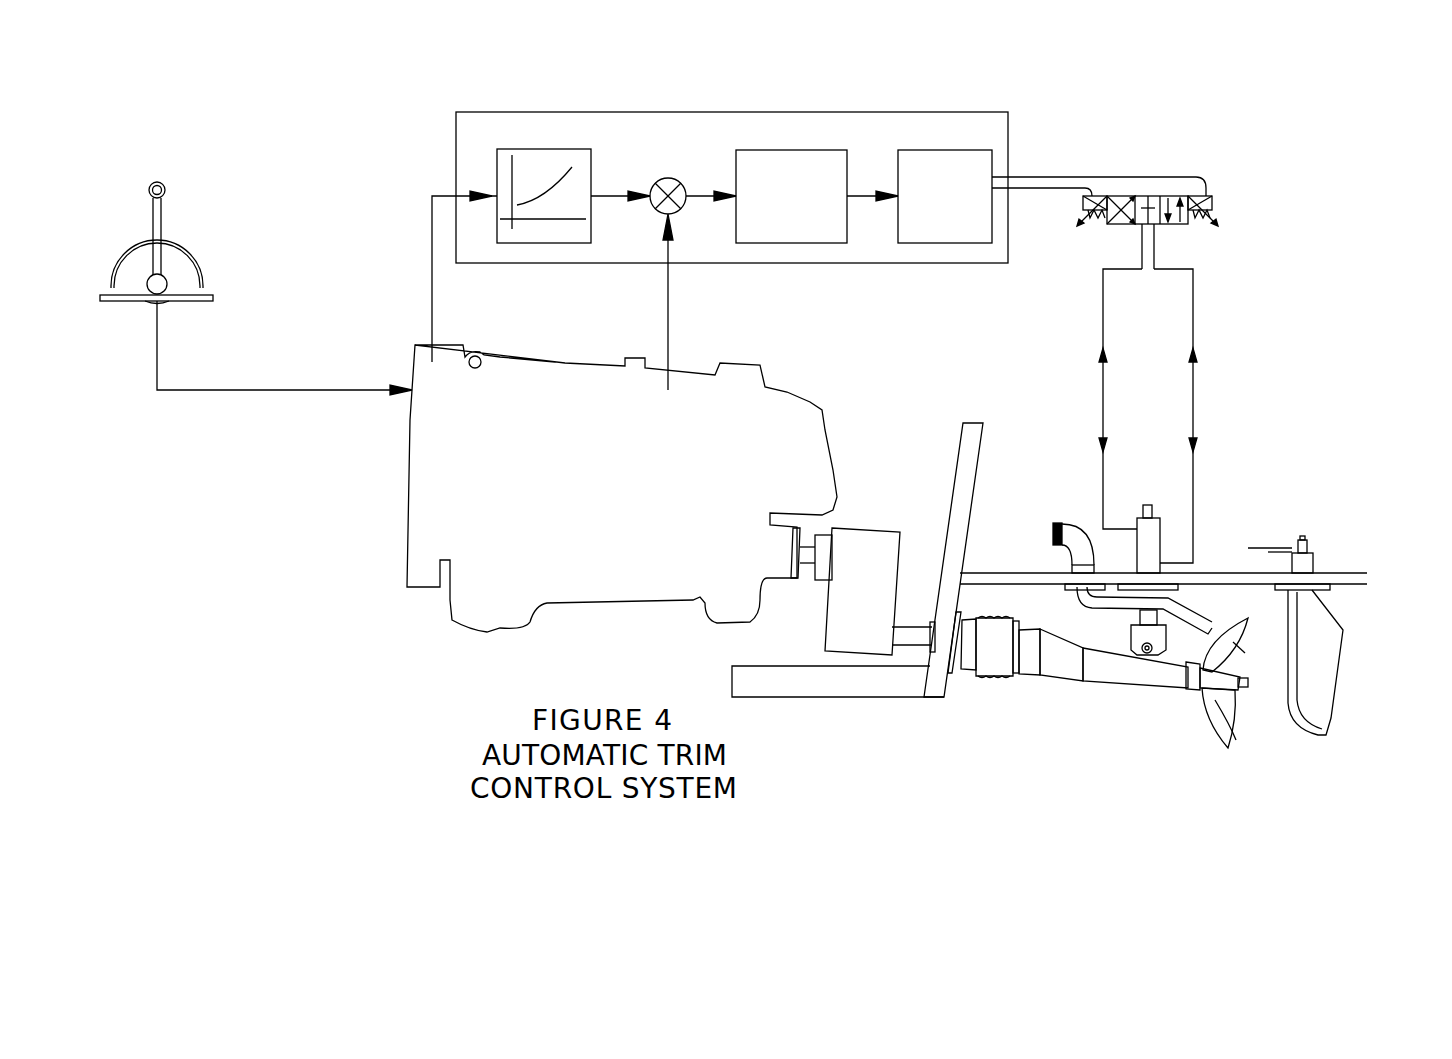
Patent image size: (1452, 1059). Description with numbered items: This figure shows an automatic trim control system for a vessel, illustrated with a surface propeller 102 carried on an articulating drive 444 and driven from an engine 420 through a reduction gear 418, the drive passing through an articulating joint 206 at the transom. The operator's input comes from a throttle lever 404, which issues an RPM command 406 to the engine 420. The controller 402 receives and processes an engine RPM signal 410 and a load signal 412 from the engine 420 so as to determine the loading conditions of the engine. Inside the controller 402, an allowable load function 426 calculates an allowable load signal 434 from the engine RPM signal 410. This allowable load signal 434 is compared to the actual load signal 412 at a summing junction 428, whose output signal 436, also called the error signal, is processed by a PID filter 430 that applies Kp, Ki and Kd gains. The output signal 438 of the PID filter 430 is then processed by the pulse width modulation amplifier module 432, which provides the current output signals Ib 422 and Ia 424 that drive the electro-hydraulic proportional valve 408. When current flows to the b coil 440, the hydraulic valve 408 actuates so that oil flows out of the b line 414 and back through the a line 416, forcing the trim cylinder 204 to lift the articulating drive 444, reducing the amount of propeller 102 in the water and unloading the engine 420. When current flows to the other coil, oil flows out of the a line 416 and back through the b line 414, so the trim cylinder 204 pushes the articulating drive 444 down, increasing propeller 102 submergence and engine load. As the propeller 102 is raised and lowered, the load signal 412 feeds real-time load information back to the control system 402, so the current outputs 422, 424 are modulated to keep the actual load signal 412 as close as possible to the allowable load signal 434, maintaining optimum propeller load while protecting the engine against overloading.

The throttle lever 404 is at (168, 233).
The RPM command 406 is at (284, 348).
The controller 402 is at (732, 166).
The engine RPM signal 410 is at (456, 276).
The load signal 412 is at (661, 302).
The allowable load function 426 is at (544, 187).
The summing junction 428 is at (668, 187).
The PID filter 430 is at (791, 186).
The pulse width modulation (PWM) amplifier module 432 is at (945, 186).
The allowable load signal 434 is at (600, 199).
The output signal of the summing junction 436 is at (696, 199).
The output signal of the PID filter 438 is at (857, 199).
The current output signal Ib 422 is at (1018, 178).
The current output signal Ia 424 is at (1016, 189).
The electro-hydraulic proportional valve 408 is at (1210, 250).
The b coil 440 is at (1214, 204).
The b line 414 is at (1188, 416).
The a line 416 is at (1109, 399).
The trim cylinder 204 is at (1153, 543).
The engine 420 is at (622, 488).
The reduction gear 418 is at (863, 591).
The articulating joint 206 is at (1040, 735).
The articulating drive 444 is at (1113, 688).
The propeller 102 is at (1213, 722).